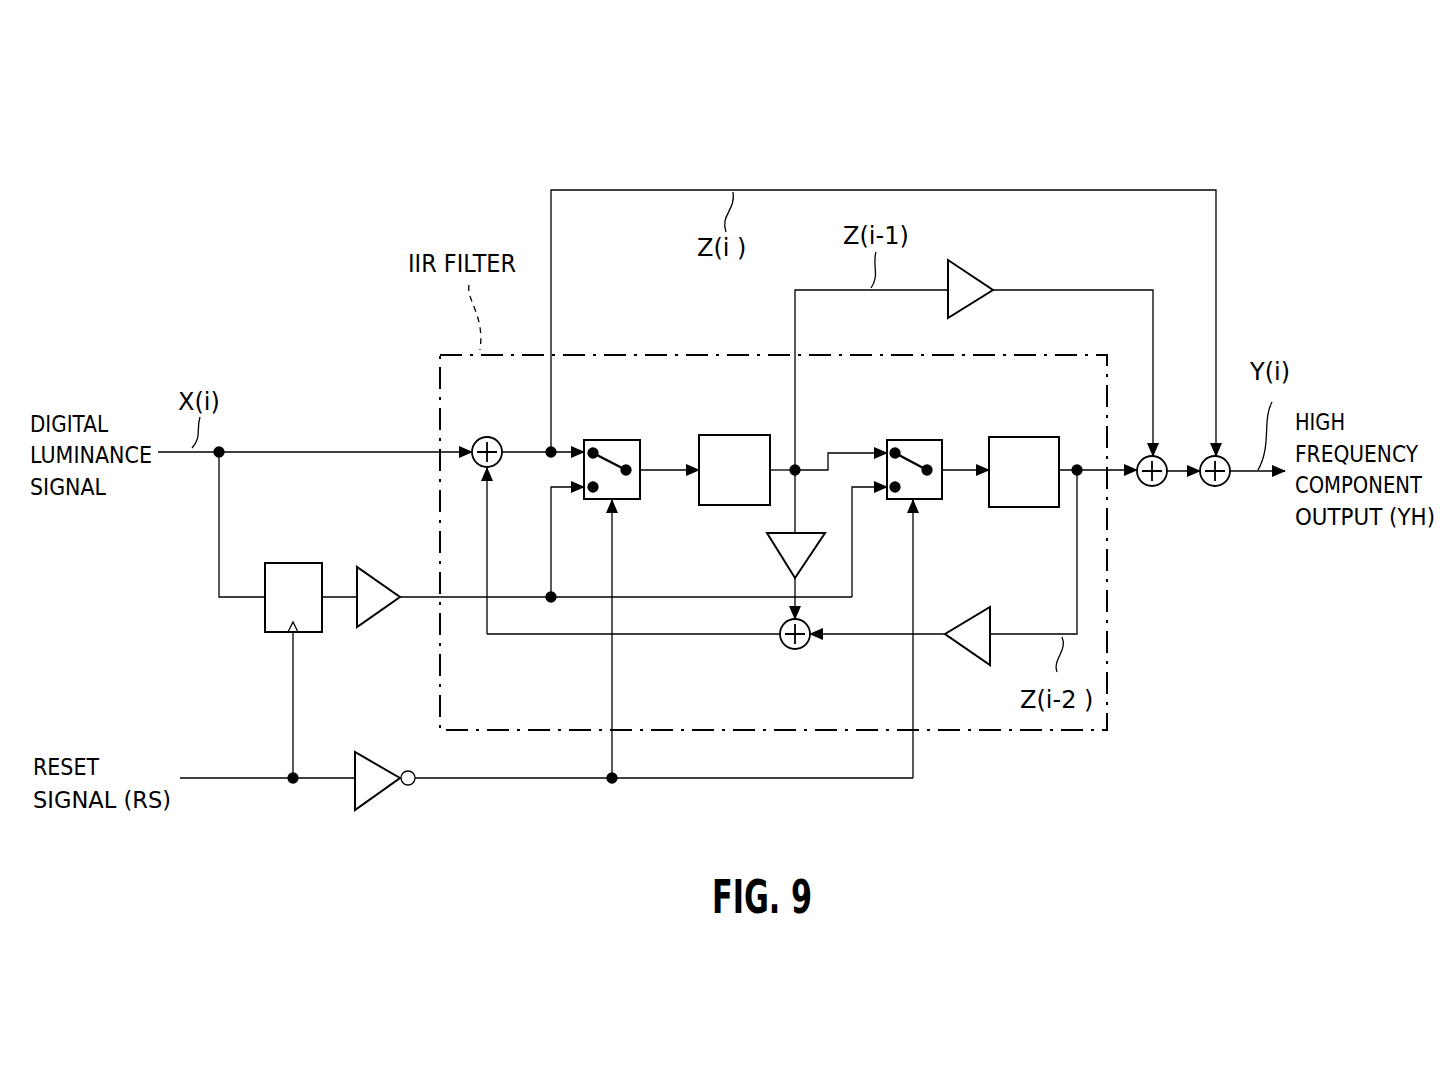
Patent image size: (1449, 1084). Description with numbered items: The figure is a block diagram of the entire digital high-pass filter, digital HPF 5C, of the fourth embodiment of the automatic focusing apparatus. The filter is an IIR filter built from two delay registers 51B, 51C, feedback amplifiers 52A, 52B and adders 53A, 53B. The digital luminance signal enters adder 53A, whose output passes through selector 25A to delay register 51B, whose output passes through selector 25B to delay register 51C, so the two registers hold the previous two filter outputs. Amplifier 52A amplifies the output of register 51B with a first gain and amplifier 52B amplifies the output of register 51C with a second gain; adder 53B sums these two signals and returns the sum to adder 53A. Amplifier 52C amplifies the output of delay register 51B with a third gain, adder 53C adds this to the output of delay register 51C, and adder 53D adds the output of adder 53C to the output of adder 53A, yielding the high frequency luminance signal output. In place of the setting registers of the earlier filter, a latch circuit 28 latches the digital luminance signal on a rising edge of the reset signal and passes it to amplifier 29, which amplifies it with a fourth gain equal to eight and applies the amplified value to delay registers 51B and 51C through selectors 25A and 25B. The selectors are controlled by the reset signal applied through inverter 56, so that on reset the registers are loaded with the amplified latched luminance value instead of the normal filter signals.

The digital HPF 5C is at (1110, 143).
The latch circuit 28 is at (283, 560).
The amplifier 29 is at (378, 615).
The inverter 56 is at (378, 800).
The adder 53A is at (490, 437).
The adder 53B is at (797, 650).
The adder 53C is at (1152, 487).
The adder 53D is at (1213, 487).
The selector 25A is at (608, 438).
The selector 25B is at (908, 438).
The delay register 51B is at (726, 433).
The delay register 51C is at (1016, 435).
The amplifier 52A is at (777, 548).
The amplifier 52B is at (975, 648).
The amplifier 52C is at (970, 272).